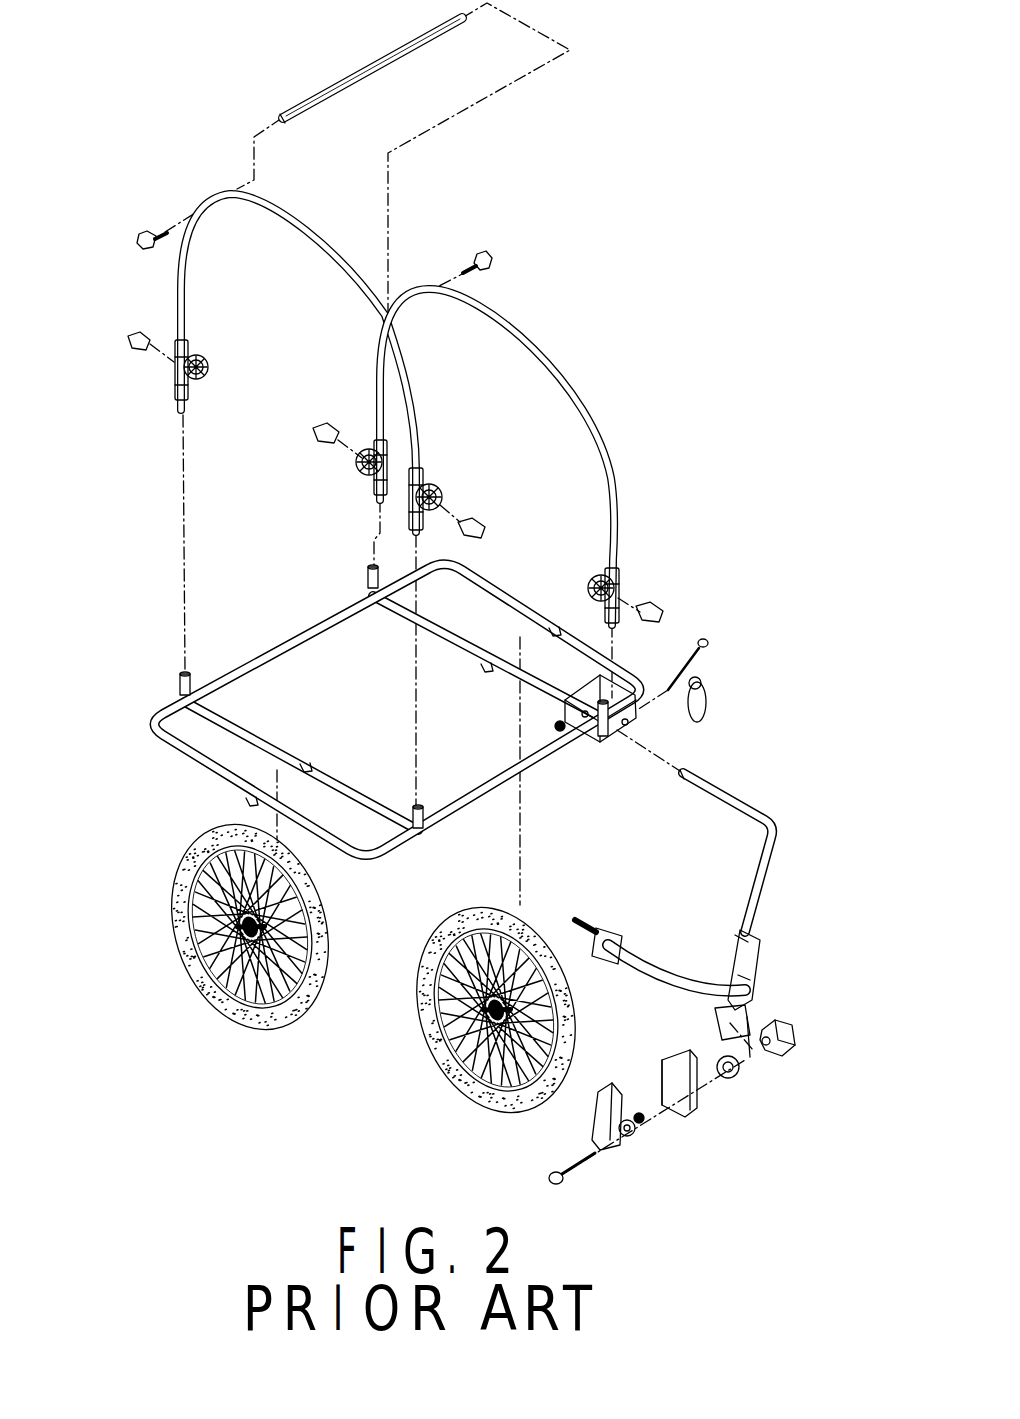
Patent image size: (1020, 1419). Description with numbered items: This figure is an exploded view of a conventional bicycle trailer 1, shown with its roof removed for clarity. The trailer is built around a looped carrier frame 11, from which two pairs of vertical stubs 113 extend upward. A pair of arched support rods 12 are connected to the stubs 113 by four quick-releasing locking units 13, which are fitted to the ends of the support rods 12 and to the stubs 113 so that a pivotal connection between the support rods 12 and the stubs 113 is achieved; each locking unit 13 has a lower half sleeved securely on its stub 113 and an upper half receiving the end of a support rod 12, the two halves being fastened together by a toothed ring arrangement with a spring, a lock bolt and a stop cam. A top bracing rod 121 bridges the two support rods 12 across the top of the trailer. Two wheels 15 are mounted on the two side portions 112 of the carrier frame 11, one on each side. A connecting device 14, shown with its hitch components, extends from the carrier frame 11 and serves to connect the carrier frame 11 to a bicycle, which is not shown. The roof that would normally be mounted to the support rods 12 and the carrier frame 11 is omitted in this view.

The bicycle trailer 1 is at (178, 525).
The looped carrier frame 11 is at (158, 715).
The side portions 112 is at (183, 762).
The vertical stubs 113 is at (192, 672).
The support rods 12 is at (179, 287).
The top bracing rod 121 is at (346, 82).
The quick-releasing locking units 13 is at (190, 346).
The connecting device 14 is at (760, 884).
The wheels 15 is at (243, 1010).